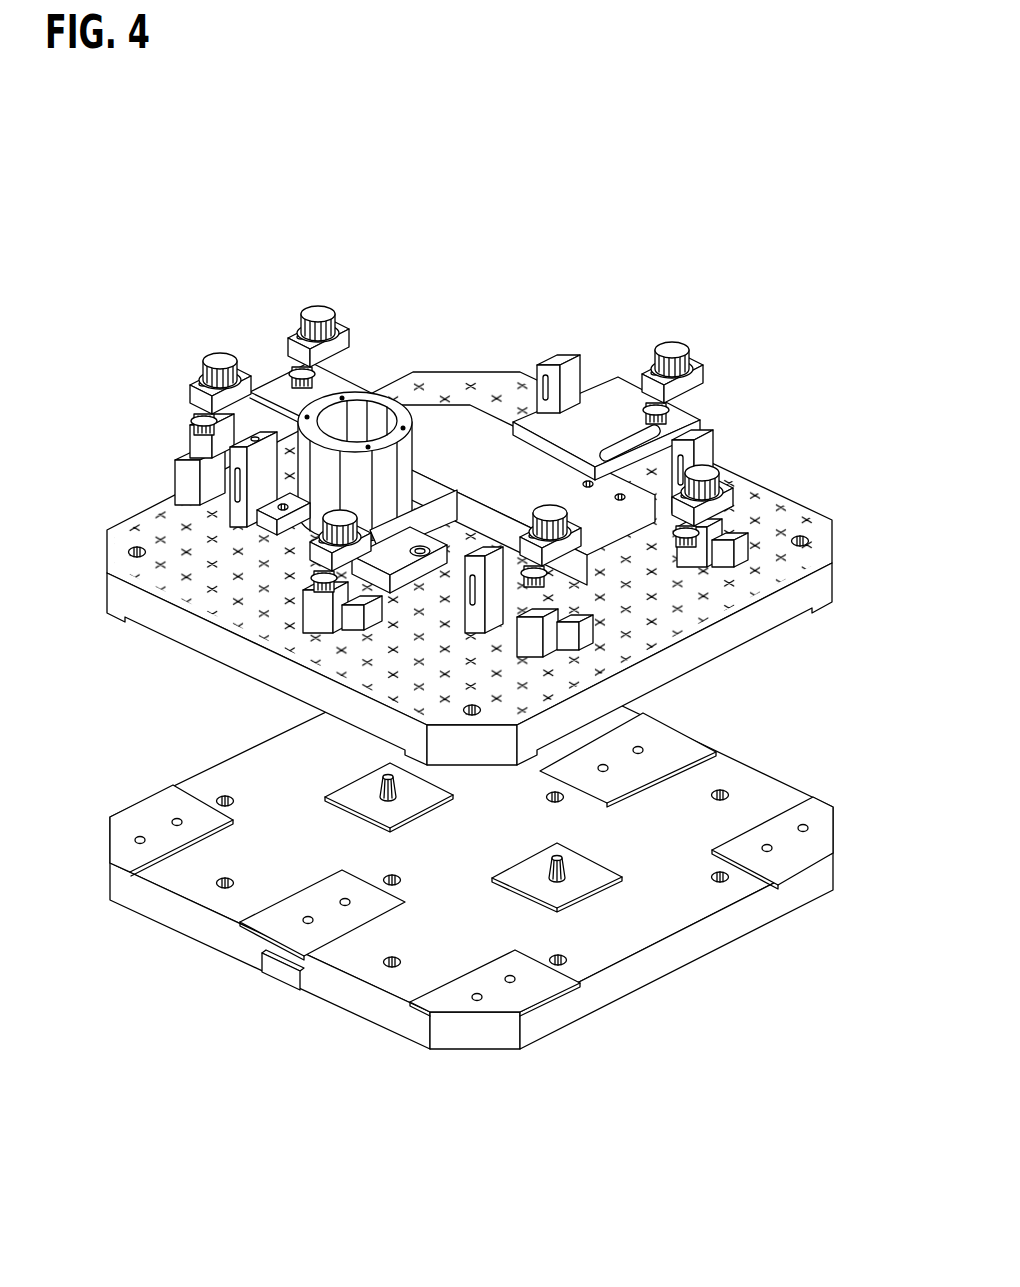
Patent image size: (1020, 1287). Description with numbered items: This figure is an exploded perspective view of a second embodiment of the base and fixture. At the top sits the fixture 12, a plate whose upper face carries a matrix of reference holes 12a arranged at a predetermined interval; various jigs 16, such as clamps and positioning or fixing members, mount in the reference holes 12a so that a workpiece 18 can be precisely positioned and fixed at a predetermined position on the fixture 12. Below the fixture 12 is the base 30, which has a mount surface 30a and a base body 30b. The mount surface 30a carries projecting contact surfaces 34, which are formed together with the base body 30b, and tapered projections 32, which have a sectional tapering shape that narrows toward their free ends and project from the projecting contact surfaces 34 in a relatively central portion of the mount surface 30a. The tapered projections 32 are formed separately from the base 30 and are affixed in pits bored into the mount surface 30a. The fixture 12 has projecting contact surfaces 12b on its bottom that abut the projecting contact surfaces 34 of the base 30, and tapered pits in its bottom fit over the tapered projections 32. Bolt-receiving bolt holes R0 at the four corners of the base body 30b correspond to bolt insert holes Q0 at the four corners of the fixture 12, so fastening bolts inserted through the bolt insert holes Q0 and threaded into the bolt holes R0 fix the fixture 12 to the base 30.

The fixture 12 is at (485, 552).
The reference holes 12a is at (781, 507).
The projecting contact surfaces 12b is at (120, 616).
The jigs 16 is at (439, 405).
The workpiece 18 is at (440, 417).
The base 30 is at (503, 853).
The mount surface 30a is at (650, 933).
The base body 30b is at (242, 945).
The tapered projections 32 is at (547, 873).
The projecting contact surfaces 34 is at (667, 738).
The bolt insert holes Q0 is at (129, 552).
The bolt holes R0 is at (140, 837).